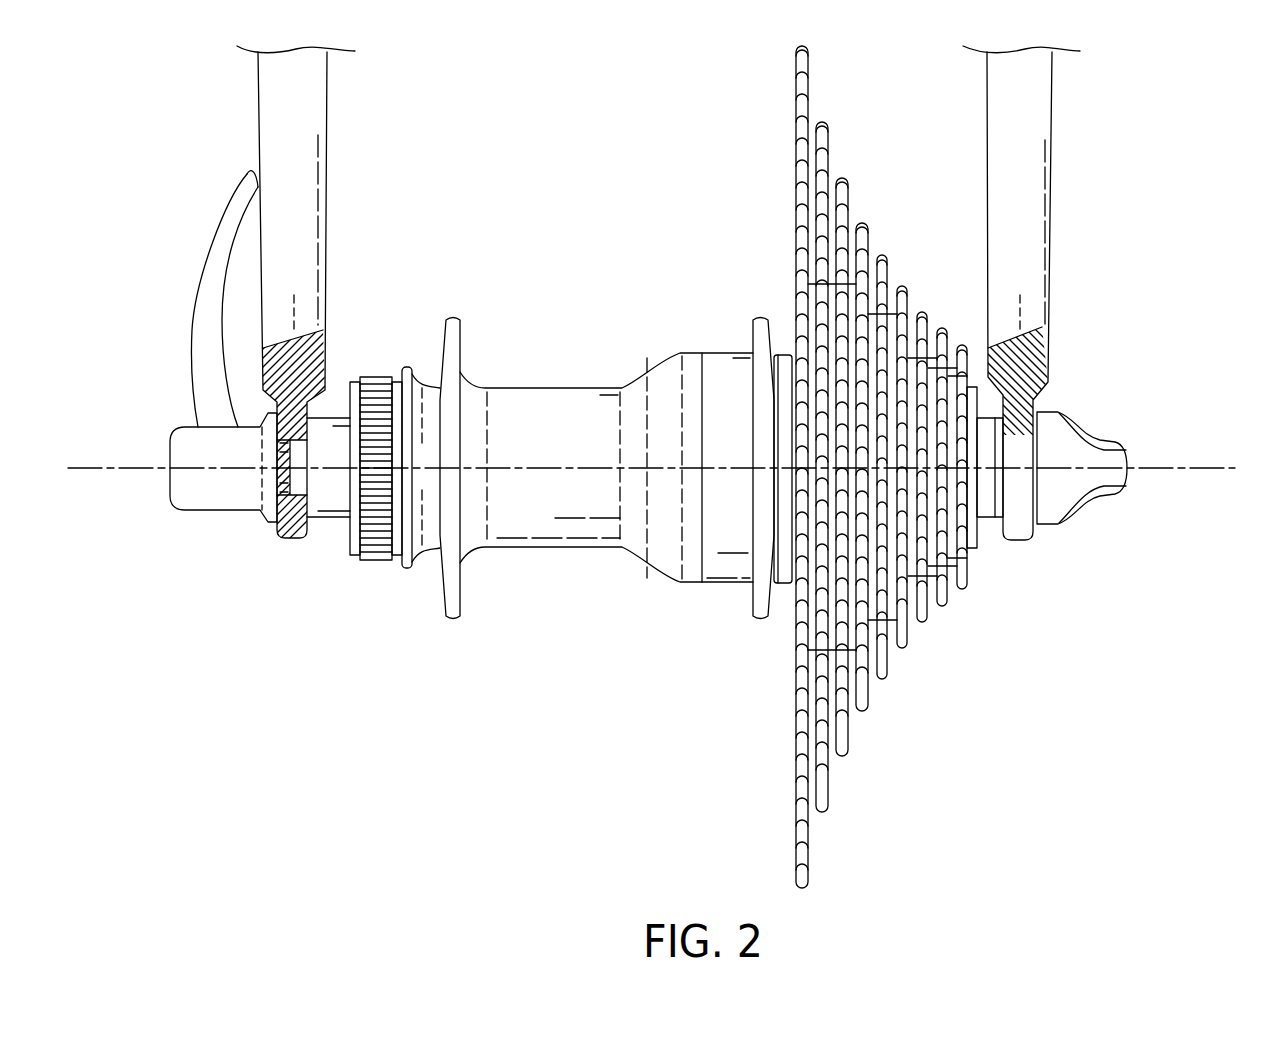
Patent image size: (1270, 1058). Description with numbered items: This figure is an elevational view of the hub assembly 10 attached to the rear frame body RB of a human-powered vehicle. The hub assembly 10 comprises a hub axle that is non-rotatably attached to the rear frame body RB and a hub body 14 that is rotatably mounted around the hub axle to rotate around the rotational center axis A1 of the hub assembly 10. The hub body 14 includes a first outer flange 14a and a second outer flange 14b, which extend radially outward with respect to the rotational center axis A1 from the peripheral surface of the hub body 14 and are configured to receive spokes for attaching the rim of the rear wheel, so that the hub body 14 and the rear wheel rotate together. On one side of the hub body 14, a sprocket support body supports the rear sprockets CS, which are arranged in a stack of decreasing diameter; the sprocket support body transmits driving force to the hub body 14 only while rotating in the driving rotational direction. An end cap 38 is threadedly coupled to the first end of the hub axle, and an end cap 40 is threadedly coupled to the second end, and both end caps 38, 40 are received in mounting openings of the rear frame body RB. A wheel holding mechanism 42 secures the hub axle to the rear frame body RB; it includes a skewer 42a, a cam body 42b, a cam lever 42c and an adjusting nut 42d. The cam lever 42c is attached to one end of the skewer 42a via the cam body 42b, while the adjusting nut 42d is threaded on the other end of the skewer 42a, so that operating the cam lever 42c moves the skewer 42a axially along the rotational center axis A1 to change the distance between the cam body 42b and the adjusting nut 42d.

The hub assembly 10 is at (615, 434).
The hub body 14 is at (609, 441).
The first outer flange 14a is at (762, 318).
The second outer flange 14b is at (455, 318).
The end cap 38 is at (989, 522).
The end cap 40 is at (326, 524).
The wheel holding mechanism 42 is at (652, 364).
The skewer 42a is at (290, 484).
The cam body 42b is at (208, 510).
The cam lever 42c is at (218, 232).
The adjusting nut 42d is at (1087, 425).
The rear sprockets CS is at (773, 126).
The rear frame body RB is at (1053, 108).
The rotational center axis A1 is at (1186, 477).